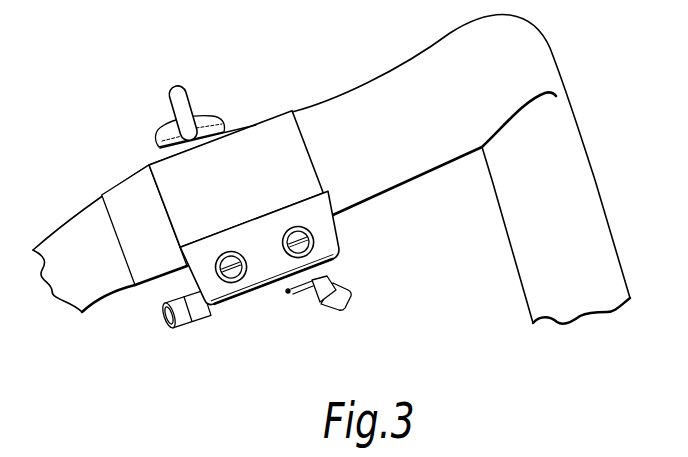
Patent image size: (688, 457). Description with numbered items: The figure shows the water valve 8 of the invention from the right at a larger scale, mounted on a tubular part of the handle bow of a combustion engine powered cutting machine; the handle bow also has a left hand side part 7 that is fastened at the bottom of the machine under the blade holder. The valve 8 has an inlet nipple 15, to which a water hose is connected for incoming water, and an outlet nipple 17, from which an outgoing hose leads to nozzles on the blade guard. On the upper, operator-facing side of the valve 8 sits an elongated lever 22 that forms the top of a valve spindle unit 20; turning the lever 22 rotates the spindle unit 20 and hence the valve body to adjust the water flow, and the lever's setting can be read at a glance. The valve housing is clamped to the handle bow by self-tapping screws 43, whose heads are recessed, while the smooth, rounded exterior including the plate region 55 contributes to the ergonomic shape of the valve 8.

The left hand side part 7 is at (562, 138).
The water valve 8 is at (284, 58).
The inlet nipple 15 is at (190, 321).
The outlet nipple 17 is at (345, 303).
The valve spindle unit 20 is at (202, 117).
The lever 22 is at (168, 107).
The self-tapping screws 43 is at (288, 258).
The lower plate 55 is at (330, 240).